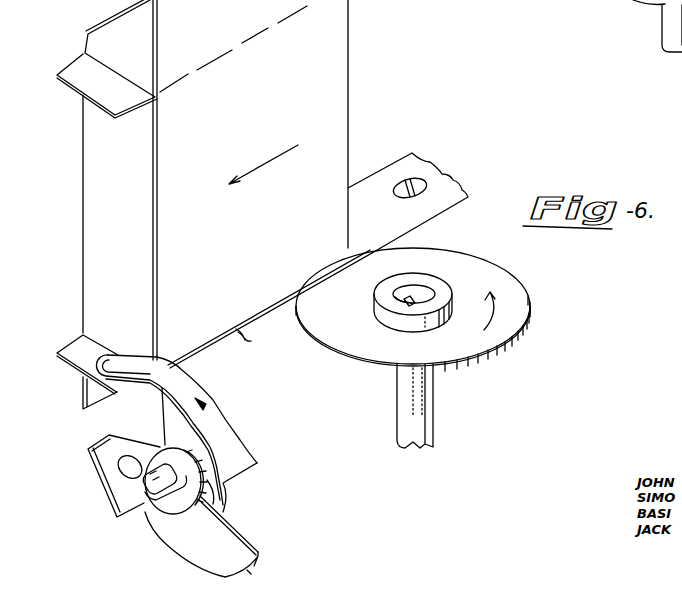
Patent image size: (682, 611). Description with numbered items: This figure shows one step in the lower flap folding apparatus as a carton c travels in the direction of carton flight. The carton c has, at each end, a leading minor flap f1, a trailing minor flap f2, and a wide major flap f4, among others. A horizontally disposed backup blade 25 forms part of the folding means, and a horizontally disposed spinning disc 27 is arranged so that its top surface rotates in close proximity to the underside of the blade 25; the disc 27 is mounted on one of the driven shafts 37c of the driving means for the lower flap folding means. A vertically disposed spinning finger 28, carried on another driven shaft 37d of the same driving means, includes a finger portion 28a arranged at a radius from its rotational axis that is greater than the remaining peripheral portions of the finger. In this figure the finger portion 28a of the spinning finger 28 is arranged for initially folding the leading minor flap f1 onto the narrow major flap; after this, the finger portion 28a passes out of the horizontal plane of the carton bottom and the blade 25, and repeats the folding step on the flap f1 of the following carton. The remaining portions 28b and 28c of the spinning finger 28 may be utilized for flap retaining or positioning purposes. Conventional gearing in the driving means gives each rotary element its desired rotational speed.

The backup blade 25 is at (387, 172).
The spinning disc 27 is at (523, 338).
The spinning finger 28 is at (258, 502).
The finger portion 28a is at (152, 358).
The portion of spinning finger 28b is at (205, 551).
The portion of spinning finger 28c is at (107, 475).
The driven shaft 37c is at (434, 413).
The driven shaft 37d is at (153, 502).
The leading minor flap f1 is at (76, 345).
The trailing minor flap f2 is at (350, 252).
The wide major flap f4 is at (84, 395).
The carton c is at (258, 115).